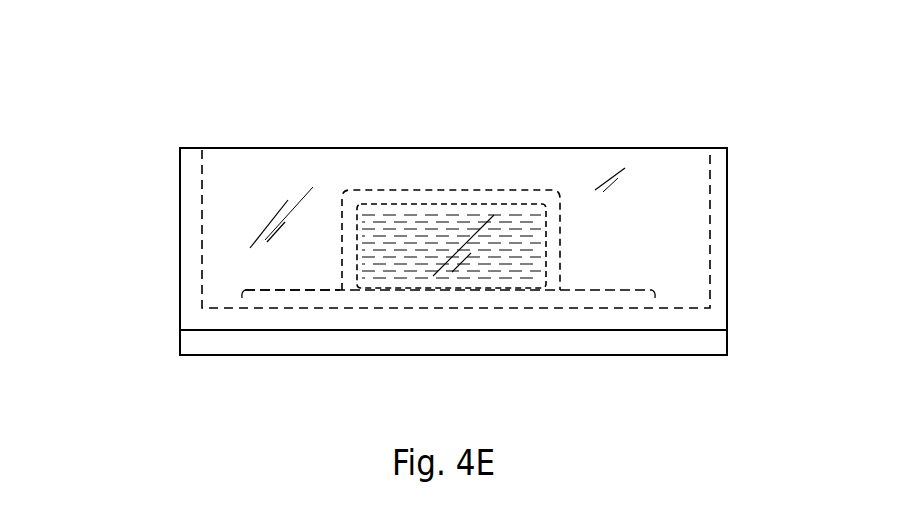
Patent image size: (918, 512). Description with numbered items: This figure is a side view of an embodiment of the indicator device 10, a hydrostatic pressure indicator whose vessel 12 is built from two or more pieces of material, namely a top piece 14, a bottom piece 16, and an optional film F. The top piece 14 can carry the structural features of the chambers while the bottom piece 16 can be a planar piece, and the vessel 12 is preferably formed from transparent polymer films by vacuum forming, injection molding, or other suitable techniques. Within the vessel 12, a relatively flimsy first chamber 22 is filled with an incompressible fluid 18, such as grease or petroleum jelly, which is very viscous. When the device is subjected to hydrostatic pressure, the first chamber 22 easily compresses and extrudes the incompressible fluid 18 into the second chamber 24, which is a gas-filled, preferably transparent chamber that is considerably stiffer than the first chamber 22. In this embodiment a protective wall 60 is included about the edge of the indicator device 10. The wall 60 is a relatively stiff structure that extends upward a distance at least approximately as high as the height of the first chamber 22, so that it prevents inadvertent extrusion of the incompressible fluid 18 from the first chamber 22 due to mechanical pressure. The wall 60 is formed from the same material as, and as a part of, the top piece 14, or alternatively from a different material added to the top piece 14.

The indicator device 10 is at (207, 75).
The vessel 12 is at (590, 272).
The top piece 14 is at (633, 288).
The bottom piece 16 is at (727, 357).
The incompressible fluid 18 is at (398, 212).
The first chamber 22 is at (497, 190).
The second chamber 24 is at (243, 293).
The protective wall 60 is at (190, 170).
The film F is at (180, 343).